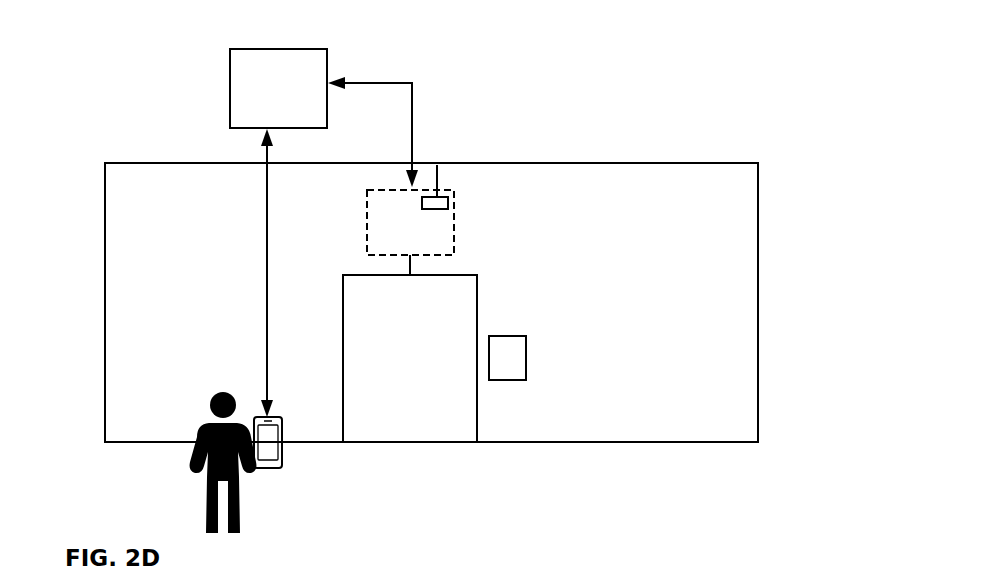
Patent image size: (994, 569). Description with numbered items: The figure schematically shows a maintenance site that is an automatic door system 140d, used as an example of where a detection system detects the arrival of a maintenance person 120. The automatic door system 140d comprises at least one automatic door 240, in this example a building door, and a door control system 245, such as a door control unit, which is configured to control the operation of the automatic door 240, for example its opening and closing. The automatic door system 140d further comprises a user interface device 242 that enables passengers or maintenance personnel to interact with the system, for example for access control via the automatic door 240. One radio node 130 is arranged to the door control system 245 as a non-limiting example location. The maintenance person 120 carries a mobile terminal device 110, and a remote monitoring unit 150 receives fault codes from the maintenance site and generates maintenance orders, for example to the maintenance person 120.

The automatic door system 140d is at (687, 88).
The remote monitoring unit 150 is at (278, 88).
The radio node 130 is at (437, 165).
The door control system 245 is at (410, 232).
The automatic door 240 is at (407, 430).
The user interface device 242 is at (527, 350).
The maintenance person 120 is at (200, 428).
The mobile terminal device 110 is at (273, 468).